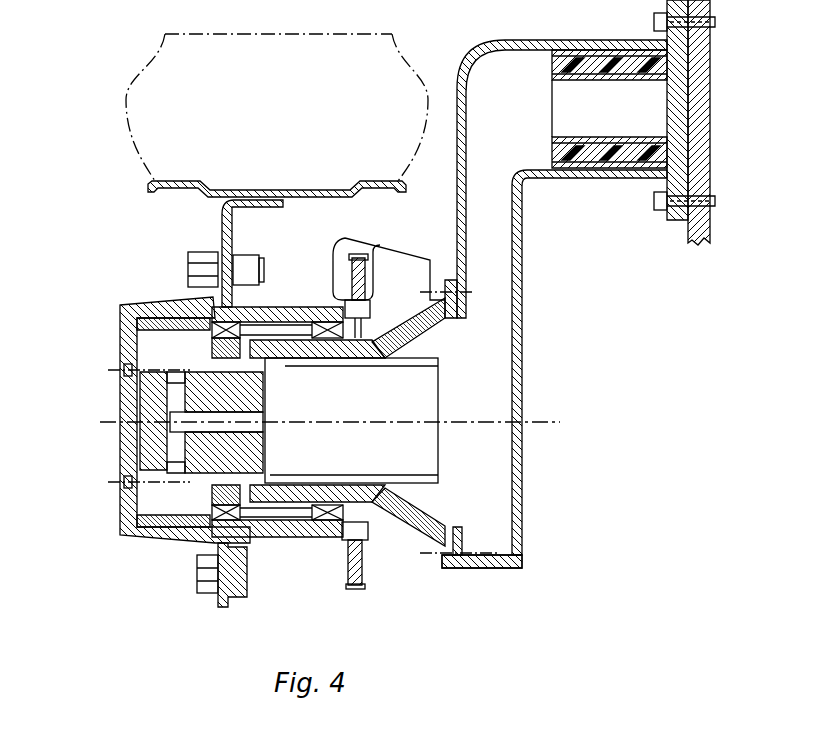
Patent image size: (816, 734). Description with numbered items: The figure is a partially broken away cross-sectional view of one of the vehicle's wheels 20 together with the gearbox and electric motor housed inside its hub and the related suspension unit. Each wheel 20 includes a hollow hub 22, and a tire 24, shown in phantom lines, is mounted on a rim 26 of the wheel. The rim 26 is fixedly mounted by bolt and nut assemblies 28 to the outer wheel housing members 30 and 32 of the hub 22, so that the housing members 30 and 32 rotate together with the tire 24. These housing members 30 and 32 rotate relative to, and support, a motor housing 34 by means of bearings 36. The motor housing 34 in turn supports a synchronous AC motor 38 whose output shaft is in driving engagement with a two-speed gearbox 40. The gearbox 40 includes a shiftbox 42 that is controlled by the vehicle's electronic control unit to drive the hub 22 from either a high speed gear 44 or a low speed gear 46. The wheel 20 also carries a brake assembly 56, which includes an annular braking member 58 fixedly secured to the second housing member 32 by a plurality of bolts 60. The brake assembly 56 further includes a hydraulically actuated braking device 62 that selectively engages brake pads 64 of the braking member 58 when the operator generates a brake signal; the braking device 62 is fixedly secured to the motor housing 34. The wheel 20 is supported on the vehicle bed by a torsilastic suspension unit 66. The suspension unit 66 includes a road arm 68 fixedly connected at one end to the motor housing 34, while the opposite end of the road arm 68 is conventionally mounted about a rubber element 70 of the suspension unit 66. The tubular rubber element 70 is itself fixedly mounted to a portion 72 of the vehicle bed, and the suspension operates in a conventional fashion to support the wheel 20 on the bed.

The wheels 20 is at (100, 193).
The hollow hub 22 is at (118, 400).
The tire 24 is at (373, 37).
The rim 26 is at (182, 192).
The bolt and nut assemblies 28 is at (186, 266).
The outer wheel housing member 30 is at (160, 303).
The outer wheel housing member 32 is at (272, 305).
The motor housing 34 is at (368, 503).
The bearings 36 is at (322, 528).
The synchronous AC motor 38 is at (440, 366).
The two-speed gearbox 40 is at (215, 520).
The shiftbox 42 is at (262, 520).
The high speed gear 44 is at (268, 385).
The low speed gear 46 is at (120, 448).
The brake assembly 56 is at (396, 242).
The annular braking member 58 is at (352, 252).
The bolts 60 is at (363, 332).
The hydraulically actuated braking device 62 is at (422, 258).
The brake pads 64 is at (358, 257).
The suspension unit 66 is at (578, 230).
The road arm 68 is at (525, 561).
The rubber element 70 is at (553, 170).
The portion of the vehicle bed 72 is at (686, 238).